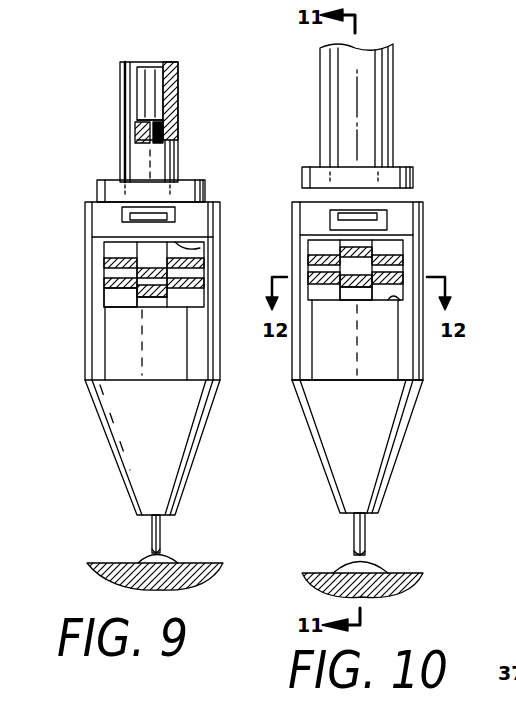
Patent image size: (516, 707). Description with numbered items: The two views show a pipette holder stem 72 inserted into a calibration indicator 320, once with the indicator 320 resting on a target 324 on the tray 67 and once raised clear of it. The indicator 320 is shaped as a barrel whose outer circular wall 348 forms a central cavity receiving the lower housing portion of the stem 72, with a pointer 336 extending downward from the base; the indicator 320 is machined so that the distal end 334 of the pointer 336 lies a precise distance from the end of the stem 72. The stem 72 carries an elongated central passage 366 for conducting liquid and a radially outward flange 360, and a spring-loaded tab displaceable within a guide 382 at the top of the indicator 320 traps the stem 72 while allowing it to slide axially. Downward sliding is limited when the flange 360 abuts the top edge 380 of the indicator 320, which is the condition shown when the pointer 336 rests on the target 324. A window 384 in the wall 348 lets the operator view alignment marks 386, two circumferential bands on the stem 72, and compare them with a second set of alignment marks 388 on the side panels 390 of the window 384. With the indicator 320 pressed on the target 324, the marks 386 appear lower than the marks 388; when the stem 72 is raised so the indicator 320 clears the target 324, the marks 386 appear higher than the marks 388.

In FIG. 9, the stem 72 is at (179, 160).
In FIG. 10, the stem 72 is at (320, 80).
In FIG. 9, the elongated central passage 366 is at (158, 86).
In FIG. 9, the flange 360 is at (233, 167).
In FIG. 9, the side panels 390 is at (108, 248).
In FIG. 9, the window 384 is at (188, 248).
In FIG. 10, the window 384 is at (360, 222).
In FIG. 9, the alignment marks 386 is at (153, 303).
In FIG. 10, the alignment marks 386 is at (350, 290).
In FIG. 9, the second set of alignment marks 388 is at (112, 288).
In FIG. 10, the second set of alignment marks 388 is at (378, 290).
In FIG. 9, the indicator 320 is at (112, 455).
In FIG. 10, the indicator 320 is at (397, 460).
In FIG. 9, the pointer 336 is at (163, 530).
In FIG. 10, the pointer 336 is at (367, 530).
In FIG. 9, the distal end 334 is at (155, 552).
In FIG. 10, the distal end 334 is at (367, 550).
In FIG. 9, the target 324 is at (143, 560).
In FIG. 10, the target 324 is at (350, 566).
In FIG. 9, the tray 67 is at (122, 583).
In FIG. 10, the tray 67 is at (393, 597).
In FIG. 10, the top edge 380 is at (417, 198).
In FIG. 10, the guide 382 is at (338, 222).
In FIG. 10, the outer circular wall 348 is at (300, 378).